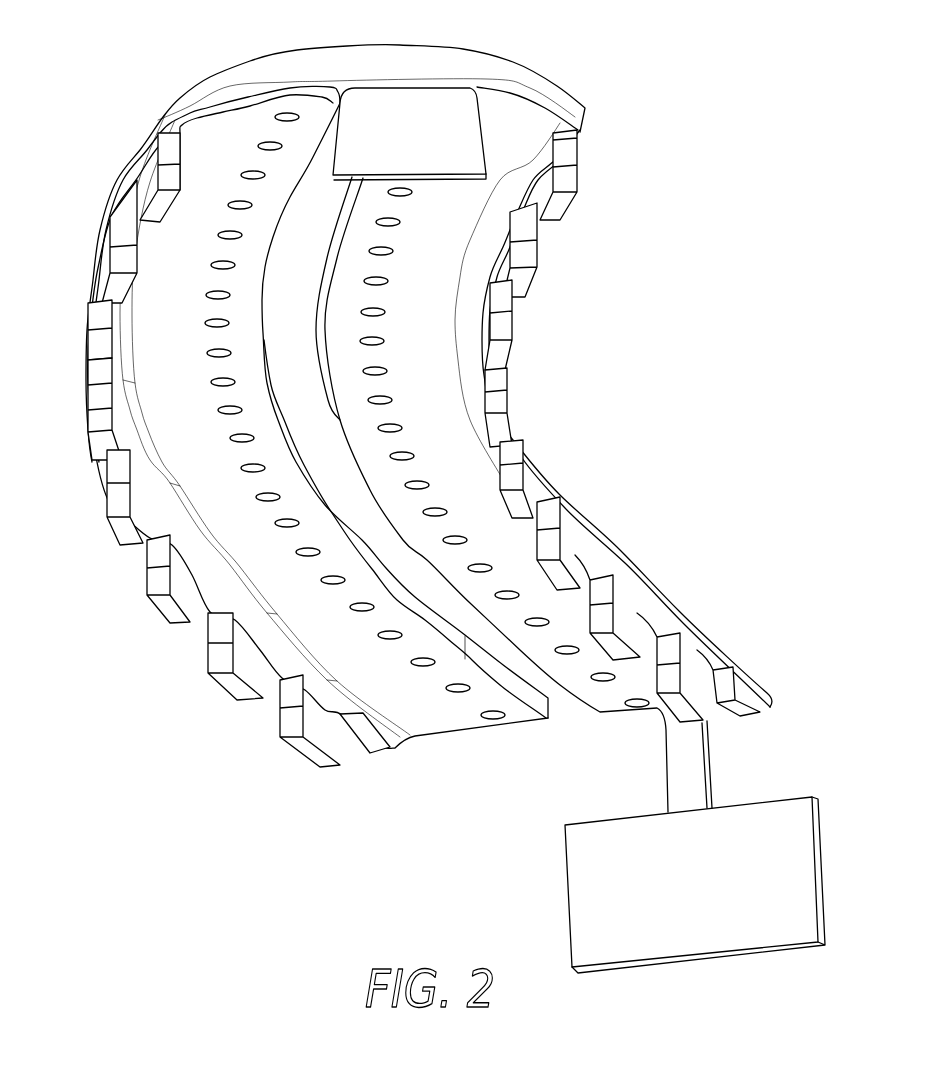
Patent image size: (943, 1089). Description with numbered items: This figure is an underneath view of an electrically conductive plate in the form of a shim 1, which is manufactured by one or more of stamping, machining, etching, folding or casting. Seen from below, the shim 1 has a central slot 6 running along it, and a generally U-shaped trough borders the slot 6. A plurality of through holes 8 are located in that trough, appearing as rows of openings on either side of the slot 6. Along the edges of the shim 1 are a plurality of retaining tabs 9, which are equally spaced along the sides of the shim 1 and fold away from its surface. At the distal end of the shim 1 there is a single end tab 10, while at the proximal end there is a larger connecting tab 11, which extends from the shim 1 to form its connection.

The shim 1 is at (701, 600).
The central slot 6 is at (287, 327).
The through holes 8 is at (425, 666).
The retaining tabs 9 is at (505, 330).
The end tab 10 is at (413, 118).
The connecting tab 11 is at (570, 884).